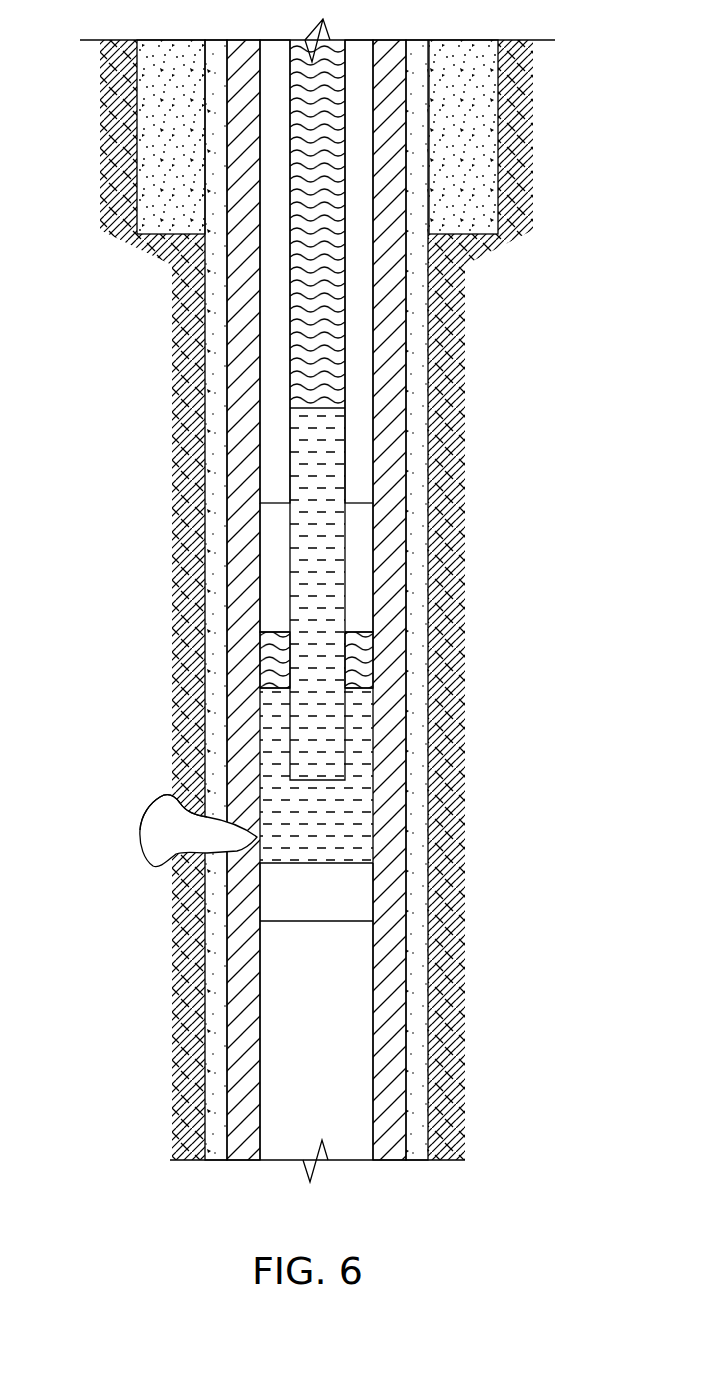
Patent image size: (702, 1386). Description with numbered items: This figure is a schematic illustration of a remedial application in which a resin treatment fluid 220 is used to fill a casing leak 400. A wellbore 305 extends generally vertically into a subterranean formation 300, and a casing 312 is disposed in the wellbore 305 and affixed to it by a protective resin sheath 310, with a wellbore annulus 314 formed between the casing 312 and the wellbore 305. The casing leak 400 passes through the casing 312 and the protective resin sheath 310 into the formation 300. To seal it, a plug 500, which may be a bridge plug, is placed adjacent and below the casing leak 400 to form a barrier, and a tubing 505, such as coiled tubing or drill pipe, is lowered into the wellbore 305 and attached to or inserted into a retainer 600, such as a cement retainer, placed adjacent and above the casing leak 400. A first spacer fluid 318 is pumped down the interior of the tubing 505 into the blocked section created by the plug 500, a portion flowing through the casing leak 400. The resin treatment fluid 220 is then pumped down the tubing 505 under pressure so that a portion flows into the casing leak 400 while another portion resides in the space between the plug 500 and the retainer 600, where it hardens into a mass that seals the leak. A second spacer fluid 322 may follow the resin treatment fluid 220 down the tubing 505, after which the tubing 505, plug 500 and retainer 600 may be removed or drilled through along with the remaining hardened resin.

The resin treatment fluid 220 is at (357, 718).
The subterranean formation 300 is at (135, 836).
The wellbore 305 is at (204, 598).
The protective resin sheath 310 is at (217, 961).
The casing 312 is at (245, 555).
The wellbore annulus 314 is at (276, 383).
The first spacer fluid 318 is at (357, 661).
The second spacer fluid 322 is at (320, 210).
The casing leak 400 is at (135, 797).
The plug 500 is at (358, 892).
The tubing 505 is at (291, 318).
The retainer 600 is at (358, 577).